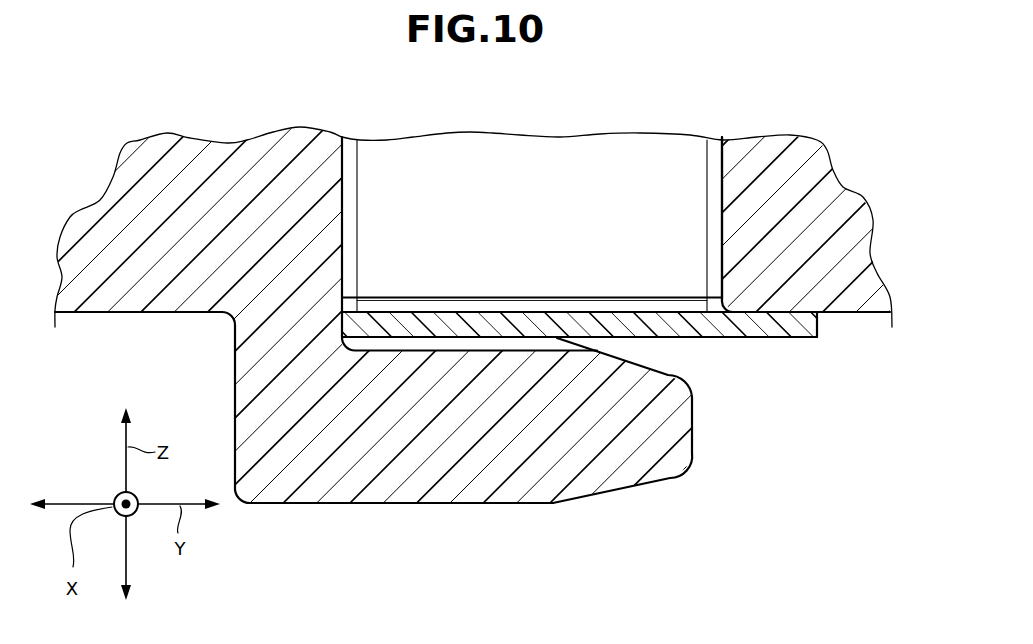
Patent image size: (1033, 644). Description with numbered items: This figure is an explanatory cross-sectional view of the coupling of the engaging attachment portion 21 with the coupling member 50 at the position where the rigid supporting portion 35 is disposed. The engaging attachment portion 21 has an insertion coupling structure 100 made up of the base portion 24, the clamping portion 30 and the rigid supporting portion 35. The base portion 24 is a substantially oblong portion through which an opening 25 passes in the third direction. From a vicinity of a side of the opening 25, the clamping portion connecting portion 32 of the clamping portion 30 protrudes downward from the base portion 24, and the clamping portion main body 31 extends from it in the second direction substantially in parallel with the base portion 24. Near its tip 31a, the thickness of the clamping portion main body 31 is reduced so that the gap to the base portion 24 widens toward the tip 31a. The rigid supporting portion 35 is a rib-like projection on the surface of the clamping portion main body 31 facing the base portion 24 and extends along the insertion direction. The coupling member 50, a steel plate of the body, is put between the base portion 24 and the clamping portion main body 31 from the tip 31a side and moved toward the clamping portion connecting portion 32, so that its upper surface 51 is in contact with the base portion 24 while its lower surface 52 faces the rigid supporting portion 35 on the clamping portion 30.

The engaging attachment portion 21 is at (516, 373).
The insertion coupling structure 100 is at (516, 373).
The base portion 24 is at (758, 182).
The opening 25 is at (468, 185).
The upper surface 51 is at (529, 305).
The coupling member 50 is at (578, 358).
The lower surface 52 is at (663, 339).
The rigid supporting portion 35 is at (408, 348).
The clamping portion 30 is at (469, 453).
The clamping portion main body 31 is at (408, 488).
The tip 31a is at (694, 423).
The clamping portion connecting portion 32 is at (233, 349).